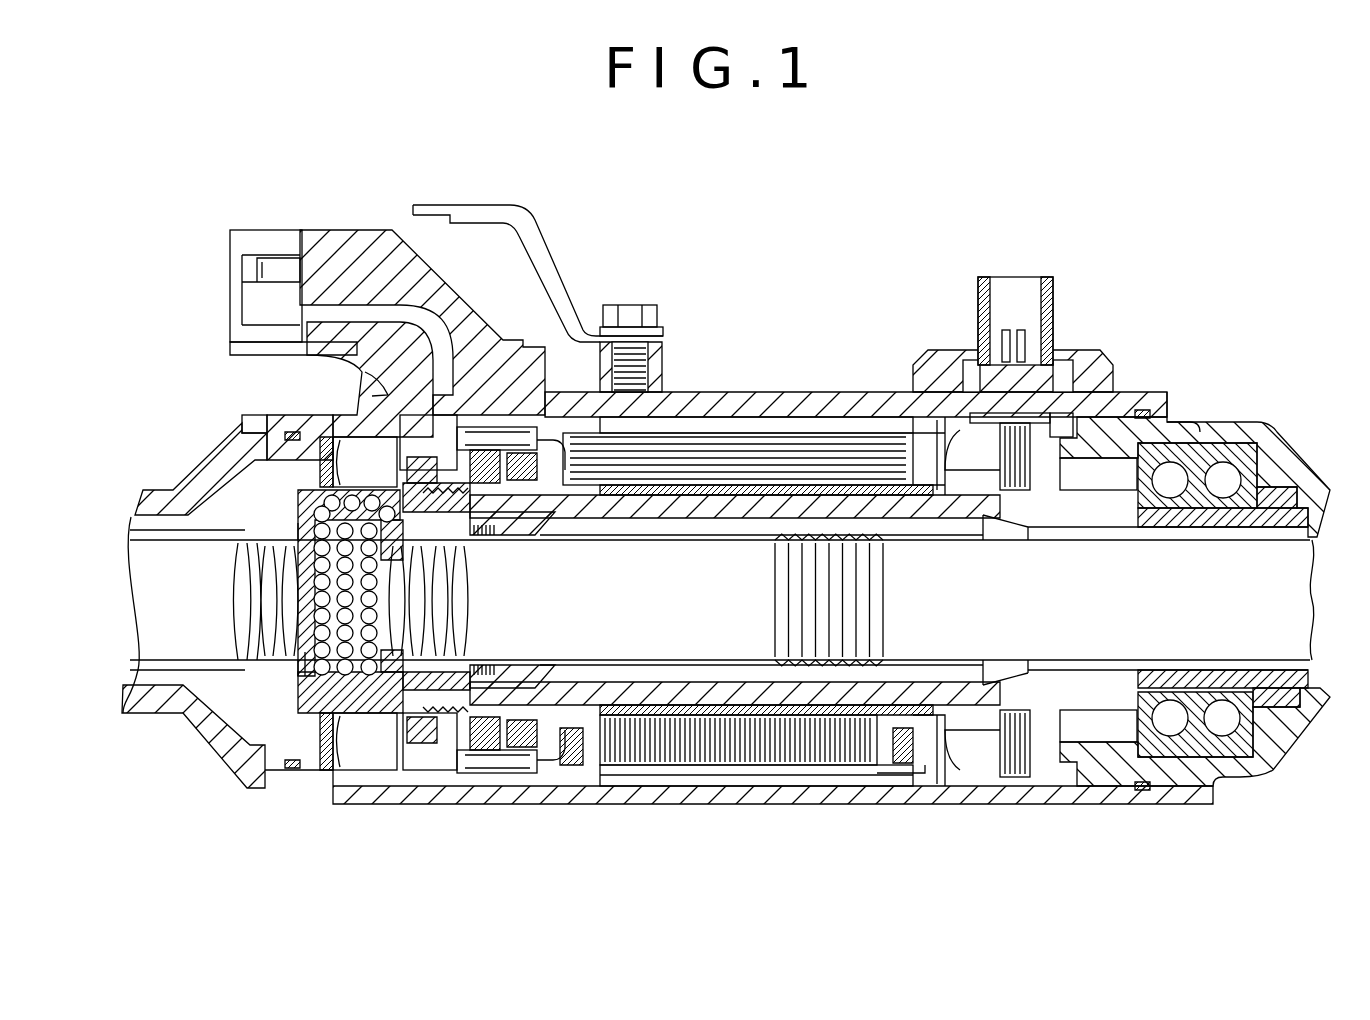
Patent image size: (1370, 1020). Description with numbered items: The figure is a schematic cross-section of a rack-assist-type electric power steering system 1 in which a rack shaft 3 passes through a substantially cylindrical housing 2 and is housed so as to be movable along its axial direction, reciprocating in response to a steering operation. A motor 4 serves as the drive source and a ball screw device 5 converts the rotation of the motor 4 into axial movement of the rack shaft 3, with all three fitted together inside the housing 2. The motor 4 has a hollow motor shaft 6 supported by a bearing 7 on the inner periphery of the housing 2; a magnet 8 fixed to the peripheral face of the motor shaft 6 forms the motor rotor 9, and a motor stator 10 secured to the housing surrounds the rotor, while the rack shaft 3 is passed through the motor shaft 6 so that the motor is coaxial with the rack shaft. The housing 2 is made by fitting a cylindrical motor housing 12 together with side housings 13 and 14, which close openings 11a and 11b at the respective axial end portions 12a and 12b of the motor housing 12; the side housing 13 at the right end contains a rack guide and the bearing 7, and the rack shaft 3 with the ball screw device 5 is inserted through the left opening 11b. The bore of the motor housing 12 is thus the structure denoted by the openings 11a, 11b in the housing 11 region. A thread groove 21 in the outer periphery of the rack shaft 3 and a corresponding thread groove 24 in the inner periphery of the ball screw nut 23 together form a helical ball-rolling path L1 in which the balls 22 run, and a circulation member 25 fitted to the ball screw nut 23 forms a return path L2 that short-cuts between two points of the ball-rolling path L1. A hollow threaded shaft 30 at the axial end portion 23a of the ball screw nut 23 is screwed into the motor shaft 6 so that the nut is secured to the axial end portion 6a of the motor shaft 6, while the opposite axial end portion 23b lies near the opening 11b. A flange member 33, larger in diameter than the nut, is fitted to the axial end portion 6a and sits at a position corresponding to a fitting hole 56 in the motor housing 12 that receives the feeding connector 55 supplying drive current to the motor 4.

The electric power steering system 1 is at (1185, 212).
The housing 2 is at (1218, 366).
The rack shaft 3 is at (1023, 607).
The motor 4 is at (955, 773).
The ball screw device 5 is at (222, 685).
The motor shaft 6 is at (624, 537).
The axial end portion of the motor shaft 6a is at (460, 537).
The bearing 7 is at (1178, 517).
The magnet 8 is at (717, 500).
The motor rotor 9 is at (903, 512).
The motor stator 10 is at (733, 425).
The motor housing 11 is at (739, 609).
The opening 11a is at (1192, 420).
The opening 11b is at (243, 436).
The motor housing 12 is at (834, 398).
The axial end portion of the motor housing 12a is at (1155, 408).
The axial end portion of the motor housing 12b is at (303, 420).
The side housing 13 is at (1292, 450).
The side housing 14 is at (195, 493).
The thread groove 21 is at (270, 545).
The balls 22 is at (381, 647).
The ball screw nut 23 is at (334, 770).
The axial end portion of the ball screw nut 23a is at (436, 637).
The axial end portion of the ball screw nut 23b is at (318, 695).
The thread groove 24 is at (300, 670).
The circulation member 25 is at (356, 490).
The threaded shaft 30 is at (455, 655).
The flange member 33 is at (420, 470).
The feeding connector 55 is at (455, 284).
The fitting hole 56 is at (372, 394).
The ball-rolling path L1 is at (368, 741).
The return path L2 is at (297, 502).